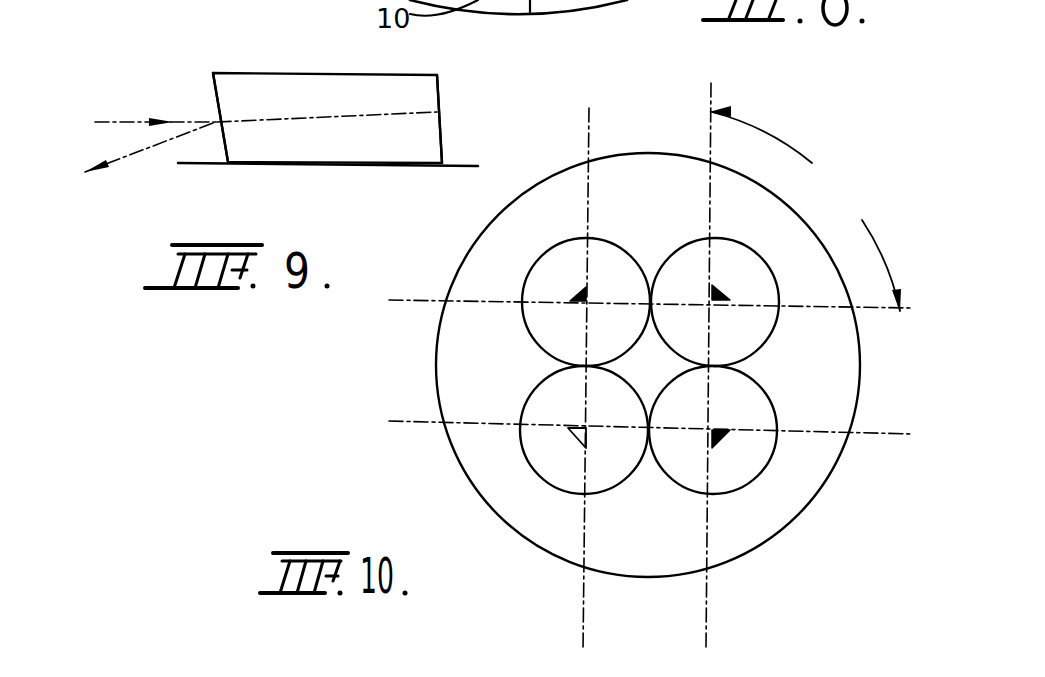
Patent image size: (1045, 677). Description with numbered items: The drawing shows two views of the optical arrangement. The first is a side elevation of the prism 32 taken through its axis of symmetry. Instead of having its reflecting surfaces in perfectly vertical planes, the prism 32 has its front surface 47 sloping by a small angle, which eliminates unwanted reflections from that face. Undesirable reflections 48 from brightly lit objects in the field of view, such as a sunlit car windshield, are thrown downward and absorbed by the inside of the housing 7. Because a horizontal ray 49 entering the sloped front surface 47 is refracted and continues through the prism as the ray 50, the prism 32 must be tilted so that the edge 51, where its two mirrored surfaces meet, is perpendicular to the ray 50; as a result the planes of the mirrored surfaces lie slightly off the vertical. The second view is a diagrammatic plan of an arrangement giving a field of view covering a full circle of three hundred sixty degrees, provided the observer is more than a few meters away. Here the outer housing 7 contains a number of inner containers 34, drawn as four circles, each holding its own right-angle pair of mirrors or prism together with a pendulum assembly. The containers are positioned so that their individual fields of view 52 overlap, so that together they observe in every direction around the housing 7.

In FIG. 10, the housing 7 is at (807, 507).
In FIG. 9, the prism 32 is at (268, 72).
In FIG. 10, the prism 32 is at (706, 298).
In FIG. 10, the inner containers 34 is at (680, 248).
In FIG. 9, the front surface 47 is at (213, 83).
In FIG. 9, the undesirable reflections 48 is at (149, 163).
In FIG. 9, the horizontal ray 49 is at (155, 108).
In FIG. 9, the refracted ray 50 is at (382, 117).
In FIG. 9, the edge 51 is at (442, 127).
In FIG. 10, the fields of view 52 is at (805, 209).